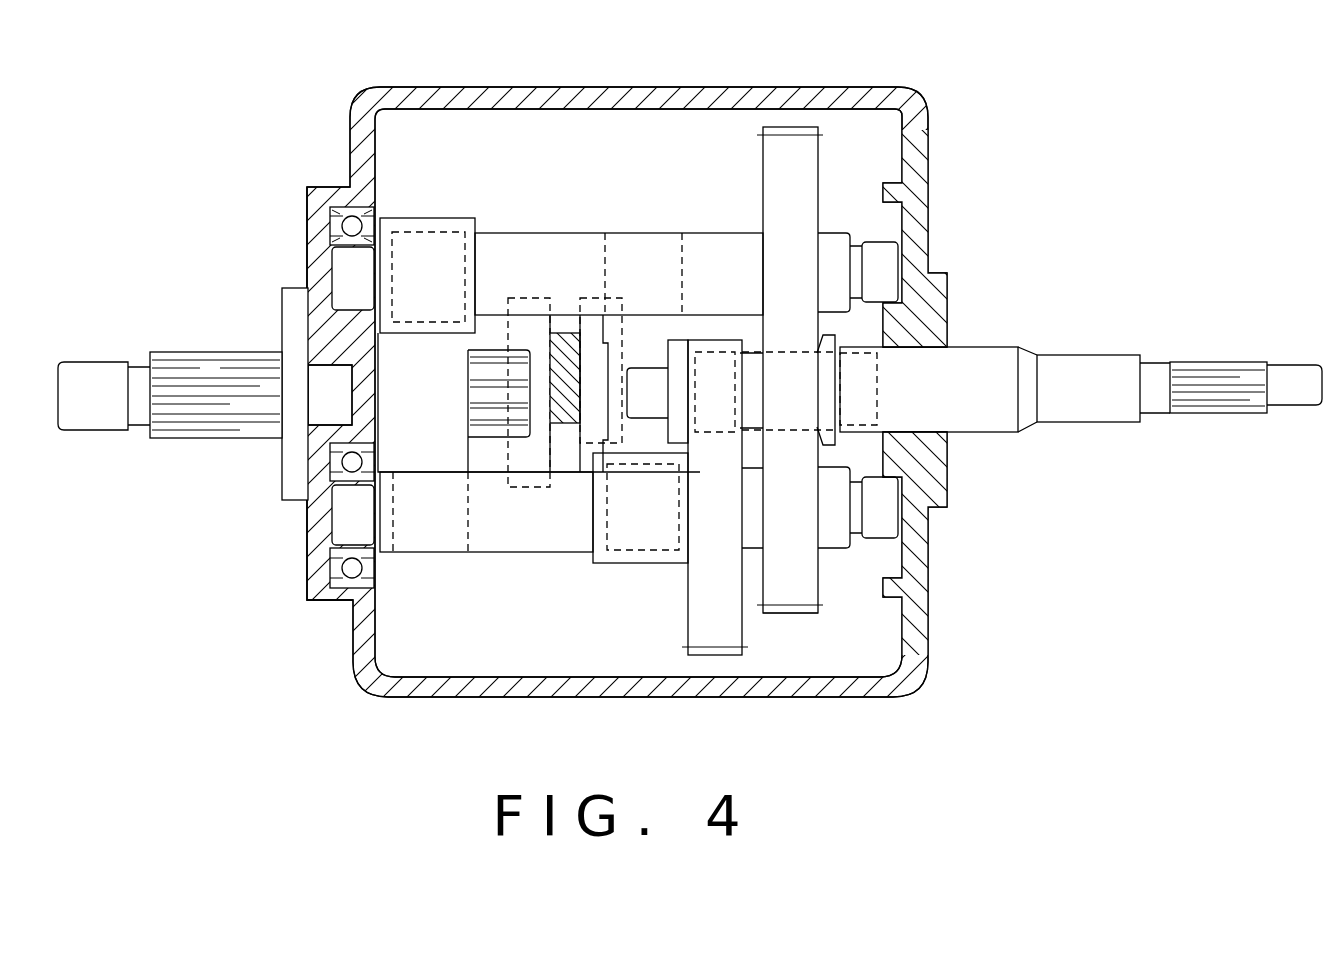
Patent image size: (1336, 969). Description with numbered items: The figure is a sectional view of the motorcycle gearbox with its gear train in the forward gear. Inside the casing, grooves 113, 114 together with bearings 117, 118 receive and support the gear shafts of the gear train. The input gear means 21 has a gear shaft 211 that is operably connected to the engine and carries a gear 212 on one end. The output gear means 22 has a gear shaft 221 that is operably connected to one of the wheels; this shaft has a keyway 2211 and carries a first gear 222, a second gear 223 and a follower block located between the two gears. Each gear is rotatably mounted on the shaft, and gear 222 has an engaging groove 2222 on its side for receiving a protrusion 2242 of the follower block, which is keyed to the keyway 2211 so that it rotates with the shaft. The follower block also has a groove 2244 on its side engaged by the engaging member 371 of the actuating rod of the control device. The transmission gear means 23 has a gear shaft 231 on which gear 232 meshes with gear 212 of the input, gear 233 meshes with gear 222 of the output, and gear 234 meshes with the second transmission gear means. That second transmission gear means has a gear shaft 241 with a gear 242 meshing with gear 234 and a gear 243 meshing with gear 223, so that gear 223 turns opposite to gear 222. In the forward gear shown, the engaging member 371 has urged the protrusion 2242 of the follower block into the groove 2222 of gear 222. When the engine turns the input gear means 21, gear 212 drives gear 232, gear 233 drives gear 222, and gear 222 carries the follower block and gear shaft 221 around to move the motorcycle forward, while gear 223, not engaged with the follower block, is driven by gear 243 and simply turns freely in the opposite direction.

The input gear means 21 is at (1072, 422).
The gear shaft 211 is at (1087, 370).
The gear 212 is at (717, 402).
The output gear means 22 is at (490, 440).
The gear shaft 221 is at (228, 382).
The keyway 2211 is at (498, 380).
The first gear 222 is at (652, 340).
The engaging groove 2222 is at (610, 430).
The second gear 223 is at (415, 432).
The transmission gear means 23 is at (480, 553).
The gear shaft 231 is at (515, 530).
The gear 232 is at (713, 617).
The gear 233 is at (642, 557).
The gear 234 is at (793, 583).
The gear shaft 241 is at (727, 258).
The gear 242 is at (787, 192).
The gear 243 is at (432, 227).
The protrusion 2242 is at (600, 430).
The groove 2244 is at (568, 343).
The engaging member 371 is at (567, 387).
The groove 113 is at (333, 577).
The groove 114 is at (352, 226).
The bearing 117 is at (352, 567).
The bearing 118 is at (330, 220).